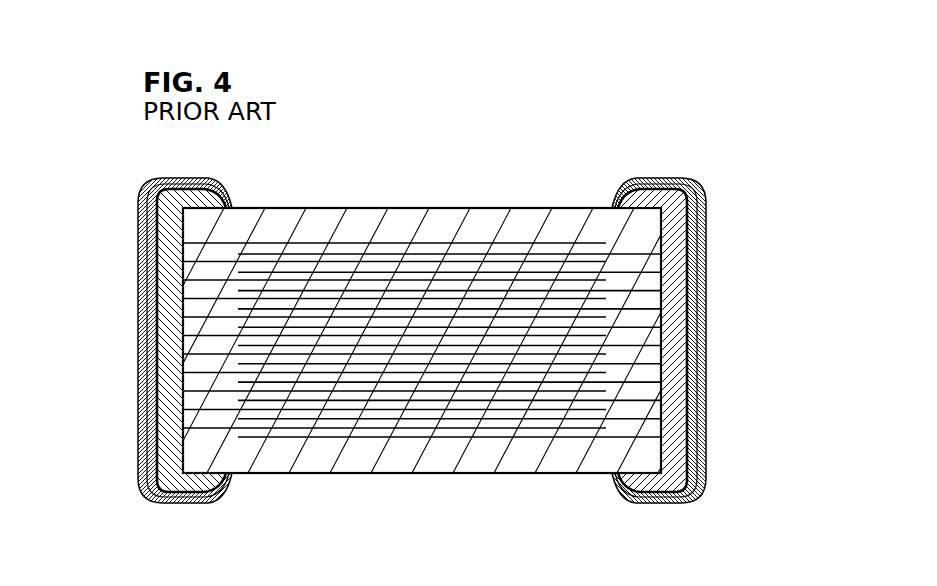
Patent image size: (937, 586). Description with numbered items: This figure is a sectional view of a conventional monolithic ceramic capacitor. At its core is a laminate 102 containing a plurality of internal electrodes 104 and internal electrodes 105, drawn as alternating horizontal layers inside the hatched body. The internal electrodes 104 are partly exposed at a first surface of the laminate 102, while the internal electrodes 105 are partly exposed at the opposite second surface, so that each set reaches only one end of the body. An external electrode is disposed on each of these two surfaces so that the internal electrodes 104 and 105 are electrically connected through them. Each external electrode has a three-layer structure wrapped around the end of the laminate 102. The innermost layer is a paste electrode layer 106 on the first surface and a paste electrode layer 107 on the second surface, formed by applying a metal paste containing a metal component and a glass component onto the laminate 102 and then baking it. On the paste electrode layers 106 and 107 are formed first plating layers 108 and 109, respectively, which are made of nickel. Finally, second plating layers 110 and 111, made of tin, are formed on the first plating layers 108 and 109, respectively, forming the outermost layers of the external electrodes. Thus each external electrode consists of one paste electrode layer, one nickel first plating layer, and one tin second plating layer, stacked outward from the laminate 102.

The laminate 102 is at (537, 208).
The internal electrodes 104 is at (539, 438).
The internal electrodes 105 is at (237, 433).
The paste electrode layer 106 is at (672, 262).
The paste electrode layer 107 is at (155, 278).
The first plating layer 108 is at (700, 314).
The first plating layer 109 is at (147, 318).
The second plating layer 110 is at (708, 353).
The second plating layer 111 is at (138, 351).